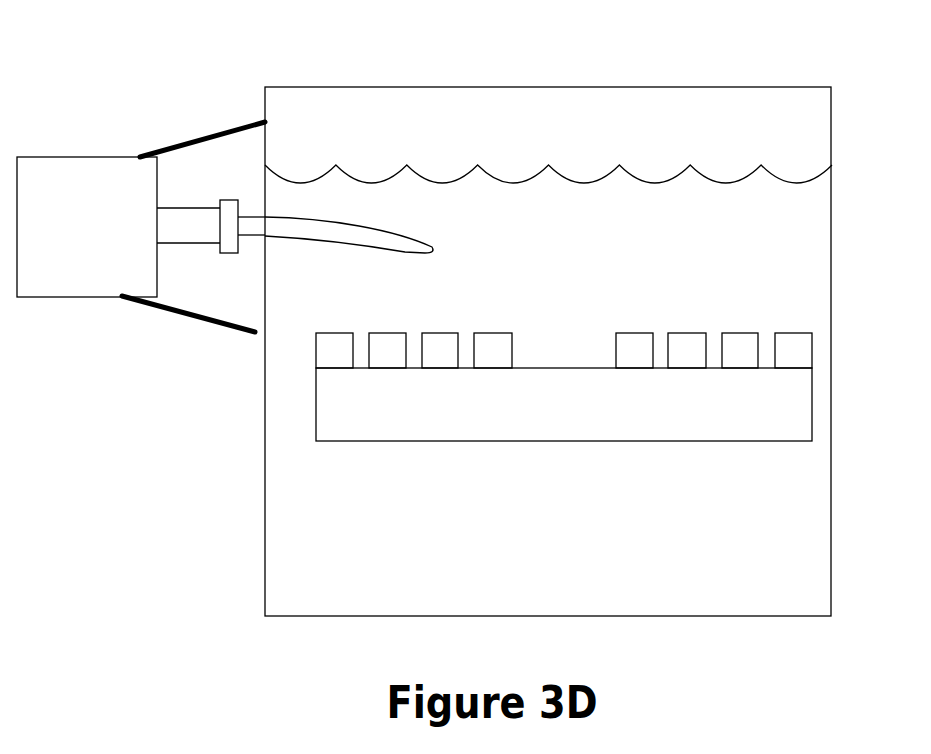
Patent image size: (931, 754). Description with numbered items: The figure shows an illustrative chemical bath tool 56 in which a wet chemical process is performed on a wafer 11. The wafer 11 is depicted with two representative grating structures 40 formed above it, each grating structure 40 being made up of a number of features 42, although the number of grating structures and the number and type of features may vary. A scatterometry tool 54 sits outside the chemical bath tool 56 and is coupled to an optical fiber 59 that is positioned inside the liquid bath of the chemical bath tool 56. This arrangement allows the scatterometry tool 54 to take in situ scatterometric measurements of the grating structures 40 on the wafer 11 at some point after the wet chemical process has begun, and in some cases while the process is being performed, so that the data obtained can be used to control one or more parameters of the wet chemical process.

The wafer 11 is at (723, 405).
The grating structure 40 is at (564, 289).
The features 42 is at (438, 358).
The scatterometry tool 54 is at (88, 210).
The chemical bath tool 56 is at (710, 107).
The optical fiber 59 is at (324, 225).